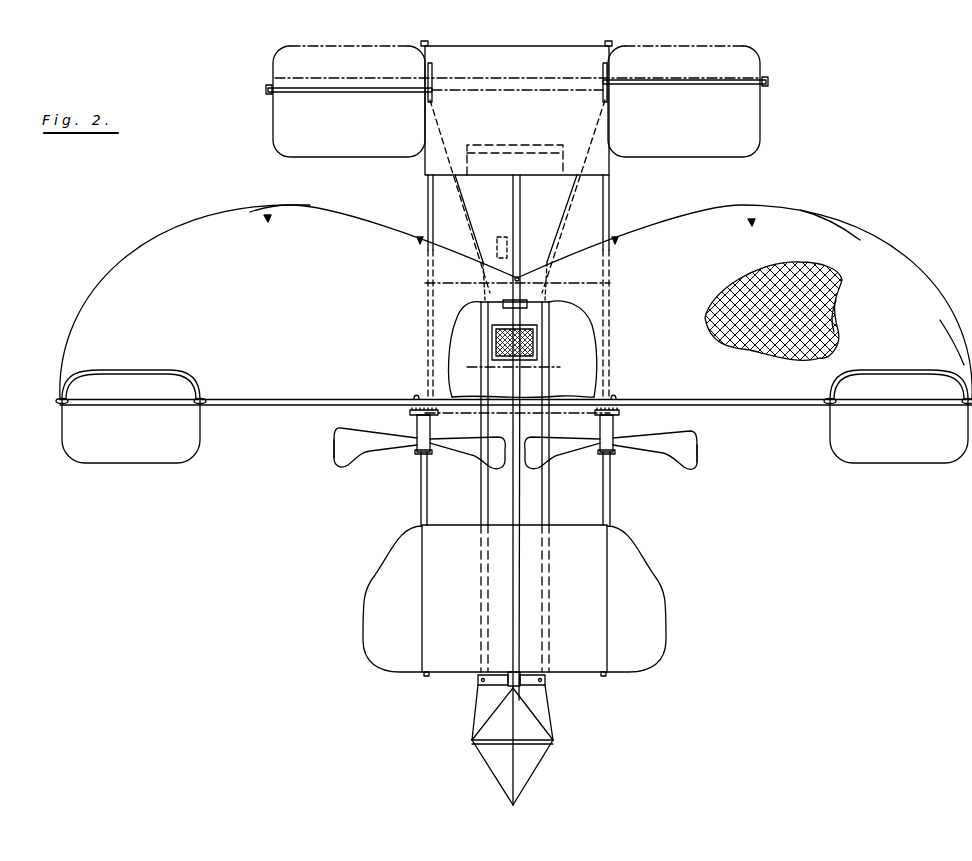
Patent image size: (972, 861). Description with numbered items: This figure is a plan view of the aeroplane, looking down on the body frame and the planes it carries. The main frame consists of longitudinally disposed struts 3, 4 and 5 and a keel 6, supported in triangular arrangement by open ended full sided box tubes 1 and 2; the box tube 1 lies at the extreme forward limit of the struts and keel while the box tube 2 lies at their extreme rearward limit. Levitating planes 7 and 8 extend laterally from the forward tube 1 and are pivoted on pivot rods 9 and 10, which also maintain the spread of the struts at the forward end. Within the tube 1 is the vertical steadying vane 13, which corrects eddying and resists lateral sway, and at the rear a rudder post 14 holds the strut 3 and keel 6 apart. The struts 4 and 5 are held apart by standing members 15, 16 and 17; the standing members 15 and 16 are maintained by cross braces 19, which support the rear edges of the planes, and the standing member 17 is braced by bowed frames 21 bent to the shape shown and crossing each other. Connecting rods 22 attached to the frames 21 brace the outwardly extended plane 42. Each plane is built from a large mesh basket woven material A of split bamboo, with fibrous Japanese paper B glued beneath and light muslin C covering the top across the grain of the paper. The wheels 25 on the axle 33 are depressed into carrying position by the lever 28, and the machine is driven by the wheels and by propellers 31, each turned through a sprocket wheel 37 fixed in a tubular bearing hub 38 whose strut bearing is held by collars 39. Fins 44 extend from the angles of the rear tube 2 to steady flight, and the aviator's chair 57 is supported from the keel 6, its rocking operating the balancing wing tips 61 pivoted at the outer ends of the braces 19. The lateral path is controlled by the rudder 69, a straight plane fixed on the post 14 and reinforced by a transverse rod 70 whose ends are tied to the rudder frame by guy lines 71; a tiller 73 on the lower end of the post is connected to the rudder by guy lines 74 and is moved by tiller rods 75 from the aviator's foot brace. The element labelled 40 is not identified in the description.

The box tube 1 is at (443, 58).
The box tube 2 is at (437, 663).
The strut 3 is at (519, 515).
The strut 4 is at (428, 512).
The strut 5 is at (610, 512).
The keel 6 is at (521, 222).
The levitating plane 7 is at (318, 52).
The levitating plane 8 is at (672, 52).
The pivot rod 9 is at (266, 91).
The pivot rod 10 is at (766, 85).
The vertical steadying vane 13 is at (618, 243).
The rudder post 14 is at (520, 683).
The standing member 15 is at (412, 397).
The standing member 16 is at (616, 397).
The standing member 17 is at (418, 243).
The cross brace 19 is at (276, 406).
The bowed frame 21 is at (275, 210).
The connecting rod 22 is at (270, 221).
The wheel 25 is at (484, 218).
The lever 28 is at (520, 277).
The propeller 31 is at (338, 456).
The axle 33 is at (520, 246).
The sprocket wheel 37 is at (410, 413).
The tubular bearing hub 38 is at (417, 428).
The collar 39 is at (419, 398).
The blade tip 40 is at (341, 430).
The plane 42 is at (136, 252).
The fin 44 is at (368, 610).
The aviator's chair 57 is at (540, 345).
The balancing wing tip 61 is at (98, 458).
The rudder 69 is at (510, 772).
The transversely disposed rod 70 is at (537, 747).
The guy line 71 is at (500, 712).
The tiller 73 is at (478, 684).
The guy line 74 is at (545, 684).
The tiller rod 75 is at (553, 322).
The basket woven material A is at (800, 262).
The Japanese paper B is at (836, 322).
The light muslin C is at (947, 350).